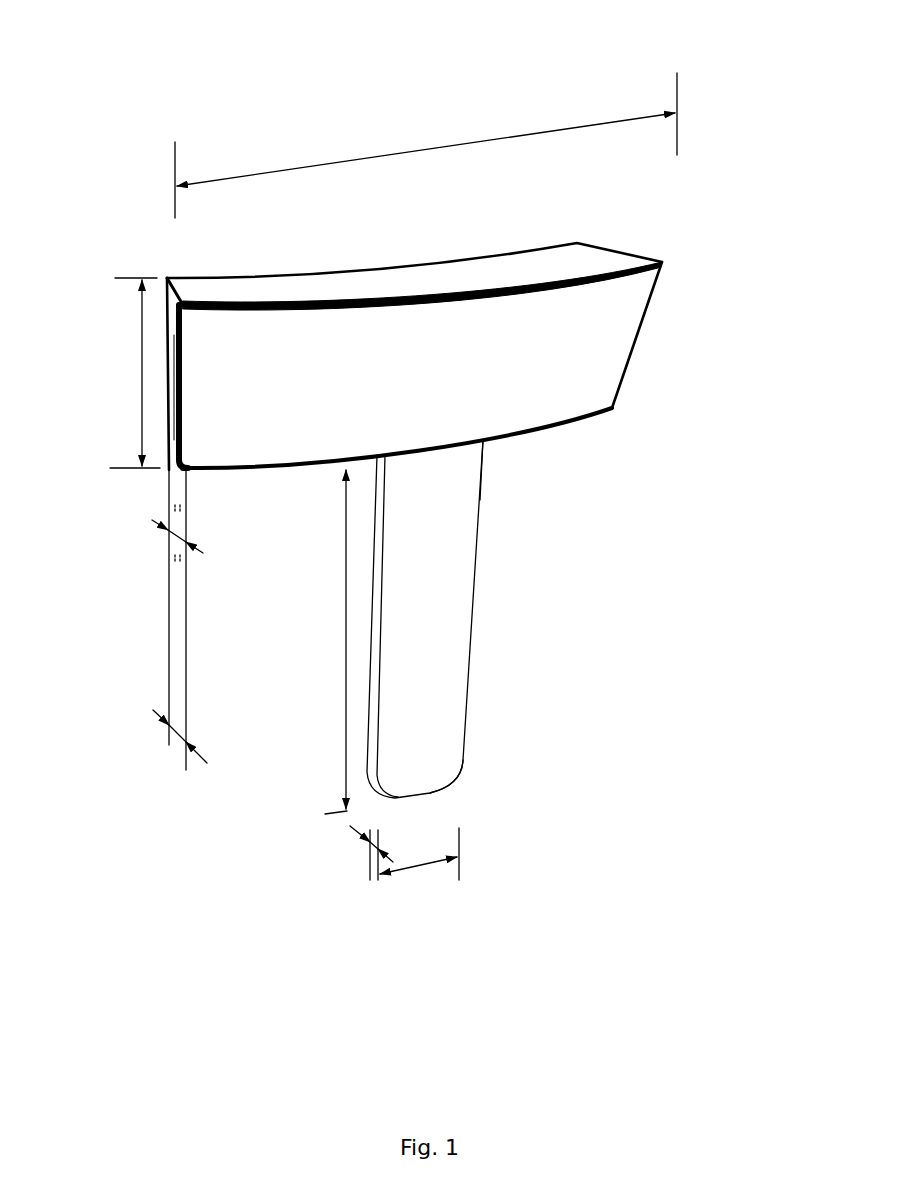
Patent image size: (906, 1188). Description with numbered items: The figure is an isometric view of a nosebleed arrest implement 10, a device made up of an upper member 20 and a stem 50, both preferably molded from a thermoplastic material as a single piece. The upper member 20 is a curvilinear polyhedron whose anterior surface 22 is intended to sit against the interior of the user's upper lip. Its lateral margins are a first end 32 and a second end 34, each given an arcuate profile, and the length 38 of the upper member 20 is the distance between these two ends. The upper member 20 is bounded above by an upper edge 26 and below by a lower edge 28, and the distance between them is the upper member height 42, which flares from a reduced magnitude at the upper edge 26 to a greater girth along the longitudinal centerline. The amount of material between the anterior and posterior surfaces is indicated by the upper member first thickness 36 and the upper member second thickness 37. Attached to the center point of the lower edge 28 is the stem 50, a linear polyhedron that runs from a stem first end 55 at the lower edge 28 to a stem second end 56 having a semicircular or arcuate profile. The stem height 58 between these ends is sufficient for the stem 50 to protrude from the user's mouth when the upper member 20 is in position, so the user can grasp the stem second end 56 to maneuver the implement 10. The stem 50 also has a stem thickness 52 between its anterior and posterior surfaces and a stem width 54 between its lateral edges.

The nosebleed arrest implement 10 is at (95, 118).
The upper member 20 is at (670, 297).
The anterior surface 22 is at (588, 365).
The upper edge 26 is at (410, 265).
The lower edge 28 is at (290, 460).
The first end 32 is at (663, 272).
The second end 34 is at (173, 402).
The upper member first thickness 36 is at (177, 735).
The upper member second thickness 37 is at (168, 548).
The length 38 is at (482, 140).
The upper member height 42 is at (142, 387).
The stem 50 is at (478, 583).
The stem thickness 52 is at (367, 860).
The stem width 54 is at (418, 867).
The stem first end 55 is at (485, 443).
The stem second end 56 is at (448, 767).
The stem height 58 is at (344, 626).